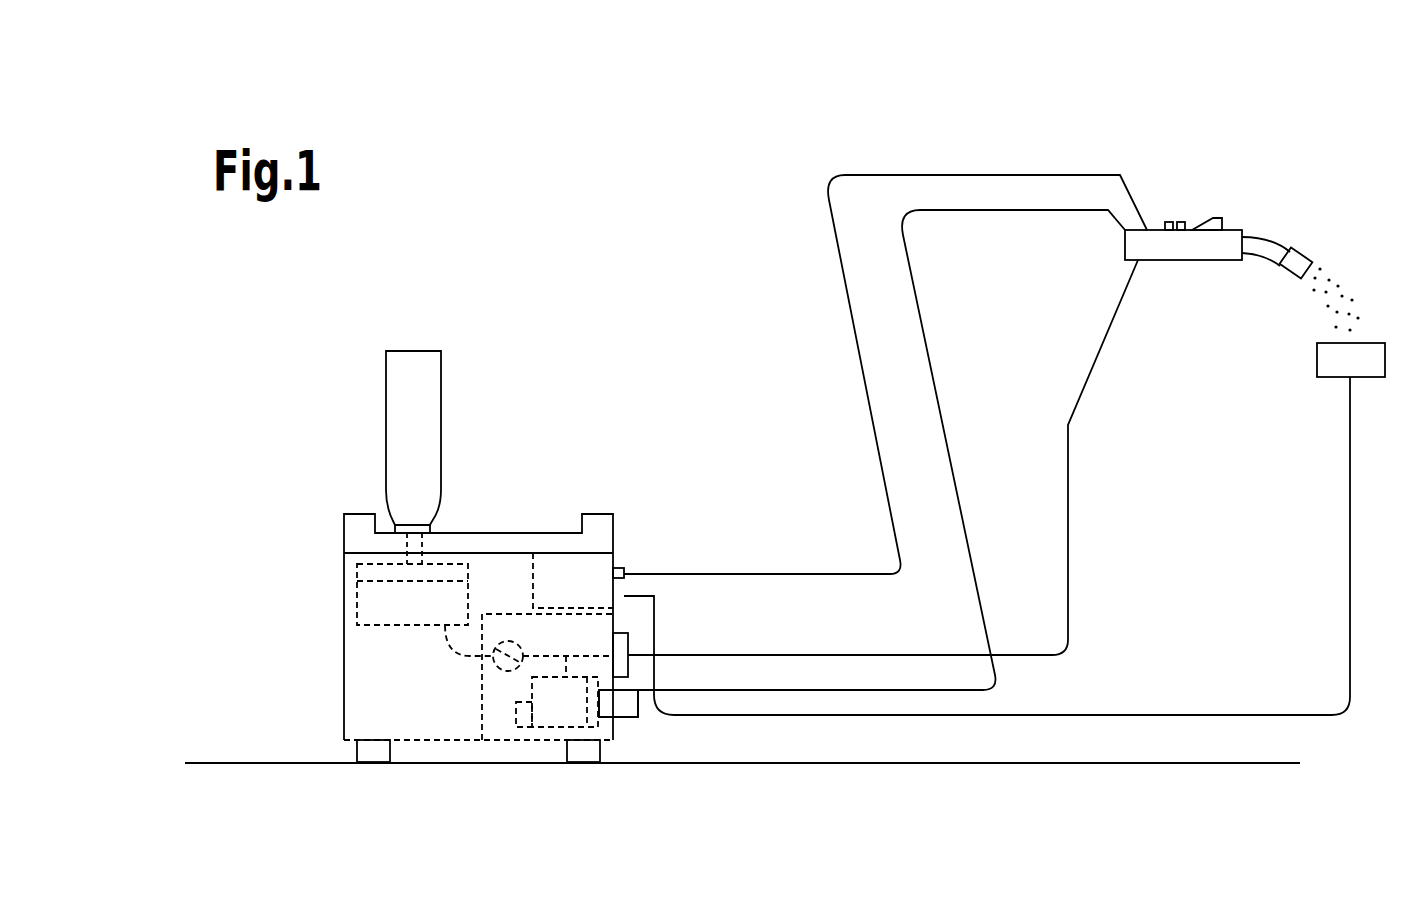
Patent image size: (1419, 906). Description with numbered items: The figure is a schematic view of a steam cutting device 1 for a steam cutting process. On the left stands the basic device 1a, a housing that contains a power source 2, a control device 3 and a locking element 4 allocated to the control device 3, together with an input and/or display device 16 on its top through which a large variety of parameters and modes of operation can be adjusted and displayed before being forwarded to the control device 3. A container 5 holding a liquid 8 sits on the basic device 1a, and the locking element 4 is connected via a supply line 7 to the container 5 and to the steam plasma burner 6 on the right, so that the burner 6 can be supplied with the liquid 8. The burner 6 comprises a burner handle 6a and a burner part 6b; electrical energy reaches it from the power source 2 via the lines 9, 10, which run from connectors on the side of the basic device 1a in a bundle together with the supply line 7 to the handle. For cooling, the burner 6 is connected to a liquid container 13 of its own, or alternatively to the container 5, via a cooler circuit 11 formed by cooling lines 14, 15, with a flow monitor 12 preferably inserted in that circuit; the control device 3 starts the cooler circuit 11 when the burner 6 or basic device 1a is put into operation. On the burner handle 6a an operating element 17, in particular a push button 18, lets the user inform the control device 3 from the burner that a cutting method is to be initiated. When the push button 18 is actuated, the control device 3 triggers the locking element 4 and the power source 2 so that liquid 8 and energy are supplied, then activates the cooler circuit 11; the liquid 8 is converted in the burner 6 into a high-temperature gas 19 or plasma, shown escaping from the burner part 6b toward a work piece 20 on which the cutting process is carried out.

The steam cutting device 1 is at (637, 237).
The basic device 1a is at (317, 500).
The power source 2 is at (560, 580).
The control device 3 is at (505, 705).
The locking element 4 is at (620, 647).
The container 5 is at (358, 598).
The steam plasma burner 6 is at (1249, 223).
The burner handle 6a is at (1202, 245).
The burner part 6b is at (1265, 248).
The supply line 7 is at (1070, 548).
The liquid 8 is at (398, 605).
The line 9 is at (628, 570).
The line 10 is at (638, 593).
The cooler circuit 11 is at (608, 737).
The flow monitor 12 is at (593, 705).
The liquid container 13 is at (527, 712).
The cooling line 14 is at (620, 720).
The cooling line 15 is at (625, 693).
The input and/or display device 16 is at (607, 532).
The operating element 17 is at (1178, 197).
The push button 18 is at (1213, 220).
The gas 19 is at (1297, 327).
The work piece 20 is at (1348, 358).